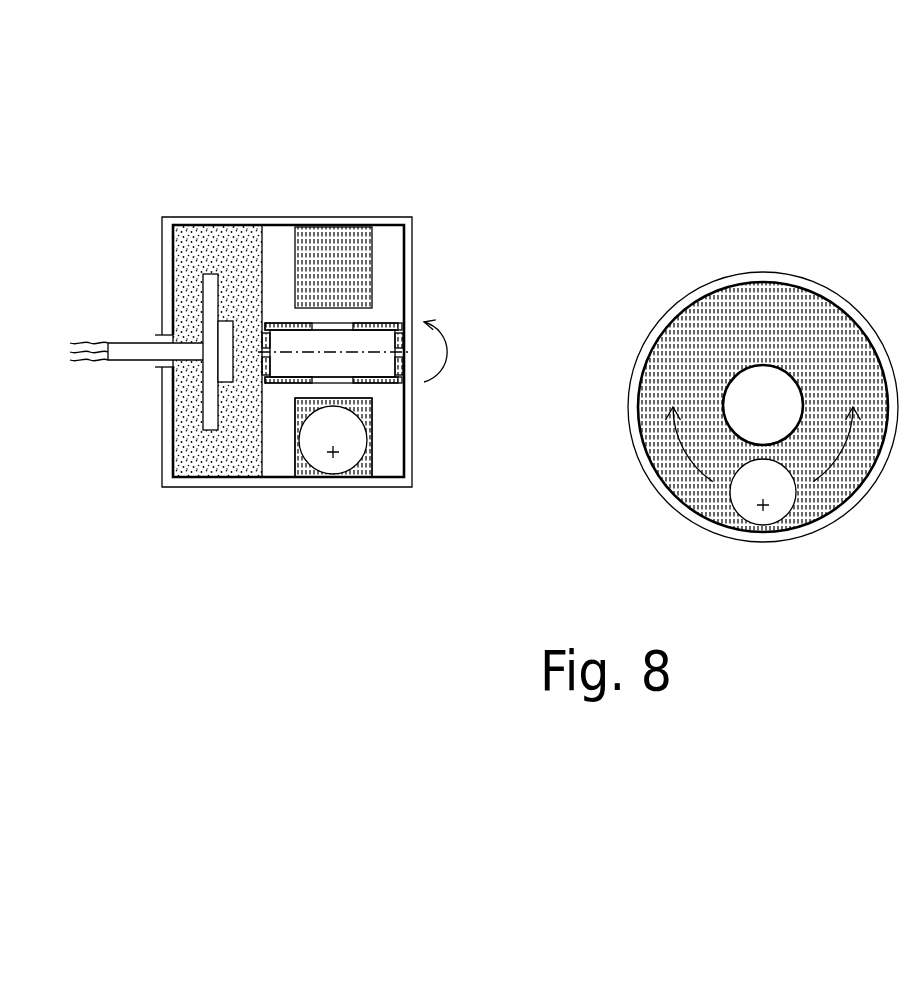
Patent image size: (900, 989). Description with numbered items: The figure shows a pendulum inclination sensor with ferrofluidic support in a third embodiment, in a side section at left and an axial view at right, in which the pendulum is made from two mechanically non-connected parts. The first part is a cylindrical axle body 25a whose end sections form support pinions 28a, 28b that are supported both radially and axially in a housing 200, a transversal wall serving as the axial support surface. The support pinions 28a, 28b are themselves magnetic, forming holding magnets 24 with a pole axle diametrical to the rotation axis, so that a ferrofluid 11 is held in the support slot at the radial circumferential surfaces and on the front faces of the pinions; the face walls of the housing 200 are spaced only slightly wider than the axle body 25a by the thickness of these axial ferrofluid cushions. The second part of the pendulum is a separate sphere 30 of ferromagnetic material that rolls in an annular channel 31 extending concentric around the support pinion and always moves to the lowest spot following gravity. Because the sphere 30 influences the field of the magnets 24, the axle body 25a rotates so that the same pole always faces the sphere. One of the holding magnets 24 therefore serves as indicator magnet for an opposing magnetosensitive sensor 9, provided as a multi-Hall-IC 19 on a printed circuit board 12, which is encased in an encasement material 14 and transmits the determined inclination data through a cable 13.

The magnetosensitive sensor 9 is at (228, 380).
The multi-Hall-IC 19 is at (221, 458).
The ferrofluid 11 is at (302, 340).
The printed circuit board 12 is at (207, 428).
The cable 13 is at (130, 353).
The encasement material 14 is at (237, 258).
The holding magnets 24 is at (339, 248).
The cylindrical axle body 25a is at (395, 328).
The support pinion 28a is at (299, 325).
The support pinion 28b is at (381, 338).
The sphere 30 is at (327, 463).
The annular channel 31 is at (300, 457).
The housing 200 is at (765, 380).